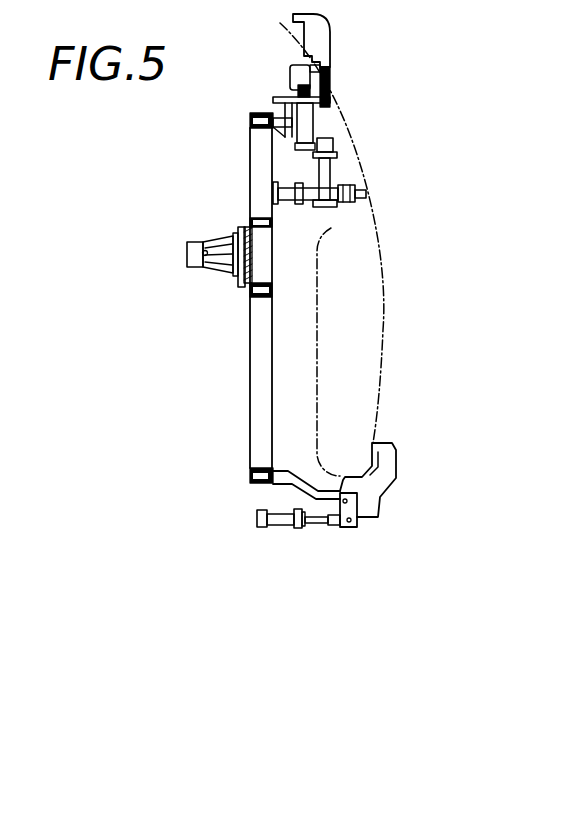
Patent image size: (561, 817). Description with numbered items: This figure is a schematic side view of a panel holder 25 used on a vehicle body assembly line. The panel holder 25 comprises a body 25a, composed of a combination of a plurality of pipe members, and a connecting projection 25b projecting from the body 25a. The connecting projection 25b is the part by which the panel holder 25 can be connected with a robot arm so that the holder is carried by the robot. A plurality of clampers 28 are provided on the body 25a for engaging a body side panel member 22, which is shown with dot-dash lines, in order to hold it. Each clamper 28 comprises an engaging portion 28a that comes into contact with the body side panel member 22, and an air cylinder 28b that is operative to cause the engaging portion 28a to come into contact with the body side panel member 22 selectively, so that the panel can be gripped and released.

The body side panel member 22 is at (384, 298).
The panel holder 25 is at (234, 188).
The body 25a is at (258, 383).
The connecting projection 25b is at (197, 268).
The clamper 28 is at (282, 65).
The engaging portion 28a is at (327, 38).
The air cylinder 28b is at (288, 205).